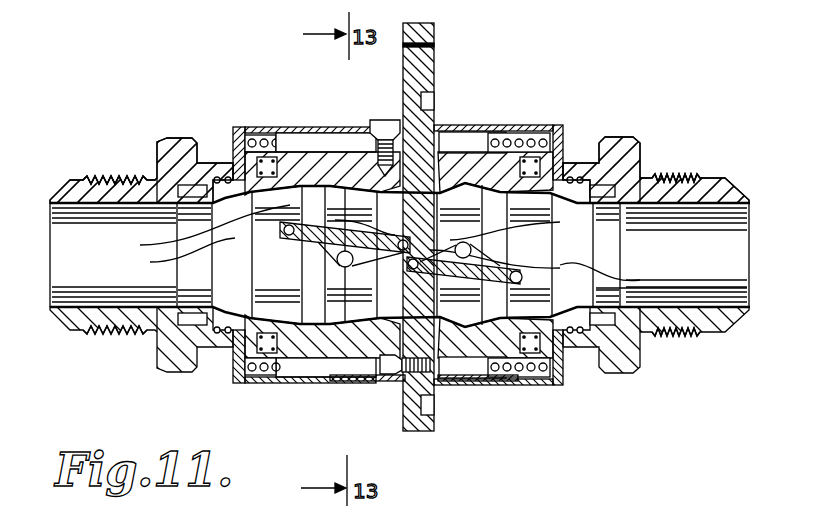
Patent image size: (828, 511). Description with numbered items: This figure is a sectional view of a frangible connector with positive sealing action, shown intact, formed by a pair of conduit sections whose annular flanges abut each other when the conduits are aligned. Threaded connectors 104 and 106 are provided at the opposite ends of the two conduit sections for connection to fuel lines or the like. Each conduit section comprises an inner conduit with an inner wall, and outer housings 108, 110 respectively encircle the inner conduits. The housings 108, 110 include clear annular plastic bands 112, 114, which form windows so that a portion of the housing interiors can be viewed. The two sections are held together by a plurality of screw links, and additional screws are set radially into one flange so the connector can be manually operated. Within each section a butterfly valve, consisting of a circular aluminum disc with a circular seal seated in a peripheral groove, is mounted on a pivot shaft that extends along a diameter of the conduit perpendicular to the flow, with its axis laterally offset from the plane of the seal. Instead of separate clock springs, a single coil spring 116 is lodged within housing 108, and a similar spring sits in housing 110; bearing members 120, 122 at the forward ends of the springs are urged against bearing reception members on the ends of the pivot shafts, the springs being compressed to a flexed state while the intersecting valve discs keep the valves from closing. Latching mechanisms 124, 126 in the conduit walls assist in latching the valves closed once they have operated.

The threaded connector 104 is at (680, 175).
The threaded connector 106 is at (103, 178).
The outer housing 108 is at (502, 121).
The outer housing 110 is at (243, 127).
The clear annular plastic band 112 is at (452, 126).
The clear annular plastic band 114 is at (312, 127).
The coil spring 116 is at (533, 143).
The bearing member 120 is at (485, 135).
The bearing member 122 is at (262, 127).
The latching mechanism 124 is at (565, 381).
The latching mechanism 126 is at (243, 383).